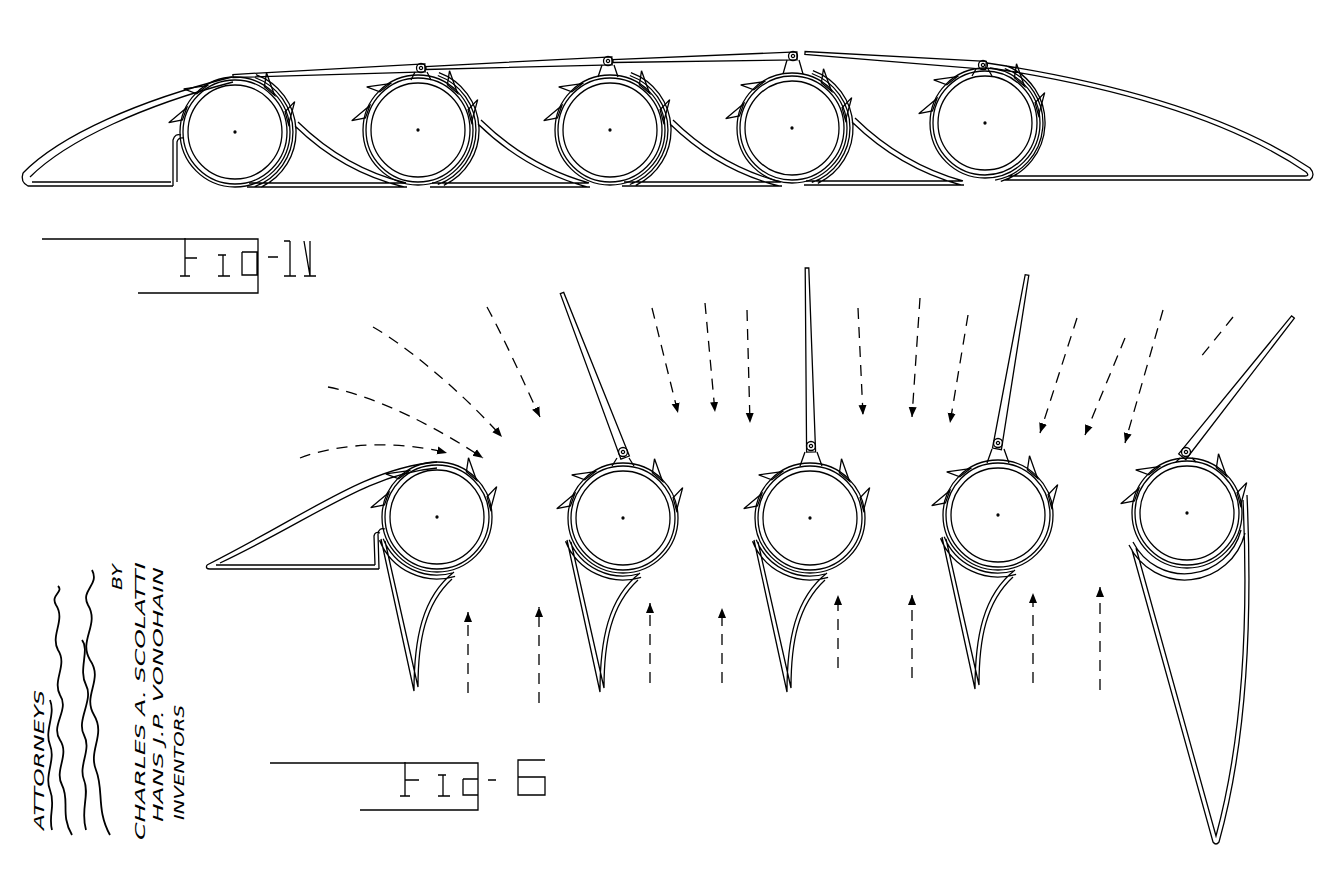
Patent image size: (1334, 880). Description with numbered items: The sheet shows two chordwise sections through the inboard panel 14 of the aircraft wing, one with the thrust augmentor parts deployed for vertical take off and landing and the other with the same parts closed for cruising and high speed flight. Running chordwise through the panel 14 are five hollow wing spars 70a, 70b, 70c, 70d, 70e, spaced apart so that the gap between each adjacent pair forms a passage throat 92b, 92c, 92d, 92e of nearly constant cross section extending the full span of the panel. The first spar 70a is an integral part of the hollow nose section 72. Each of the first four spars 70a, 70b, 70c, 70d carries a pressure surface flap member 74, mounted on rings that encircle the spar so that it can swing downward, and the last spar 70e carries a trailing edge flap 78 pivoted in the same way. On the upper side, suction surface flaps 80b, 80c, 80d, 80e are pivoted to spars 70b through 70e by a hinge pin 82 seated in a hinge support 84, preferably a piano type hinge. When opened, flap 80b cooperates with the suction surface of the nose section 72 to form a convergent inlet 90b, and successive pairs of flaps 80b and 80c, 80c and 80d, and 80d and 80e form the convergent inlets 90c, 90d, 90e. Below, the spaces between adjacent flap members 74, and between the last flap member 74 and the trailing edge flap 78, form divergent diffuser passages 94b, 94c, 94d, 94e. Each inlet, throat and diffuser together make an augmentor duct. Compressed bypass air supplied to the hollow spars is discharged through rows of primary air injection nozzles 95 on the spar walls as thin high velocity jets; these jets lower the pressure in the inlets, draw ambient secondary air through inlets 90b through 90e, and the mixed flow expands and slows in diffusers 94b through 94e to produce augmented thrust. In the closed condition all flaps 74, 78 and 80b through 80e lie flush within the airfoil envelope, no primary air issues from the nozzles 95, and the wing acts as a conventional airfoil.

In FIG. 11, the inboard panel 14 is at (110, 118).
In FIG. 6, the inboard panel 14 is at (268, 515).
In FIG. 11, the hollow nose section 72 is at (88, 188).
In FIG. 6, the hollow nose section 72 is at (262, 575).
In FIG. 11, the hollow wing spar 70a is at (264, 168).
In FIG. 6, the hollow wing spar 70a is at (460, 565).
In FIG. 11, the hollow wing spar 70b is at (447, 167).
In FIG. 6, the hollow wing spar 70b is at (646, 567).
In FIG. 11, the hollow wing spar 70c is at (639, 167).
In FIG. 6, the hollow wing spar 70c is at (833, 567).
In FIG. 11, the hollow wing spar 70d is at (821, 166).
In FIG. 6, the hollow wing spar 70d is at (1021, 564).
In FIG. 11, the hollow wing spar 70e is at (1014, 163).
In FIG. 6, the hollow wing spar 70e is at (1210, 562).
In FIG. 11, the flap member 74 is at (340, 187).
In FIG. 6, the flap member 74 is at (404, 640).
In FIG. 11, the trailing edge flap 78 is at (1134, 181).
In FIG. 6, the trailing edge flap 78 is at (1175, 738).
In FIG. 11, the suction surface flap 80b is at (352, 68).
In FIG. 6, the suction surface flap 80b is at (583, 355).
In FIG. 11, the suction surface flap 80c is at (523, 66).
In FIG. 6, the suction surface flap 80c is at (802, 338).
In FIG. 11, the suction surface flap 80d is at (711, 58).
In FIG. 6, the suction surface flap 80d is at (1010, 350).
In FIG. 11, the suction surface flap 80e is at (897, 58).
In FIG. 6, the suction surface flap 80e is at (1246, 373).
In FIG. 11, the hinge pin 82 is at (610, 57).
In FIG. 6, the hinge pin 82 is at (616, 454).
In FIG. 11, the hinge support 84 is at (622, 68).
In FIG. 6, the hinge support 84 is at (640, 452).
In FIG. 11, the primary air injection nozzle 95 is at (365, 118).
In FIG. 6, the primary air injection nozzle 95 is at (692, 472).
In FIG. 6, the convergent inlet 90b is at (485, 375).
In FIG. 6, the convergent inlet 90c is at (693, 345).
In FIG. 6, the convergent inlet 90d is at (893, 345).
In FIG. 6, the convergent inlet 90e is at (1108, 353).
In FIG. 6, the passage throat 92b is at (527, 535).
In FIG. 6, the passage throat 92c is at (715, 540).
In FIG. 6, the passage throat 92d is at (902, 545).
In FIG. 6, the passage throat 92e is at (1090, 541).
In FIG. 6, the divergent diffuser passage 94b is at (504, 638).
In FIG. 6, the divergent diffuser passage 94c is at (687, 648).
In FIG. 6, the divergent diffuser passage 94d is at (878, 650).
In FIG. 6, the divergent diffuser passage 94e is at (1070, 647).